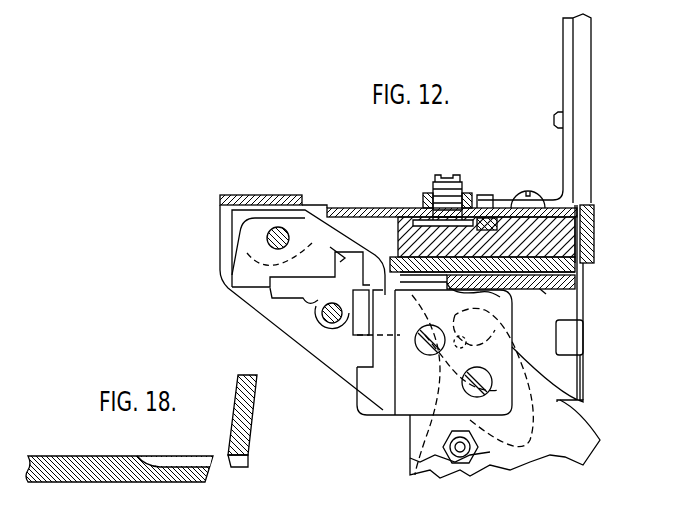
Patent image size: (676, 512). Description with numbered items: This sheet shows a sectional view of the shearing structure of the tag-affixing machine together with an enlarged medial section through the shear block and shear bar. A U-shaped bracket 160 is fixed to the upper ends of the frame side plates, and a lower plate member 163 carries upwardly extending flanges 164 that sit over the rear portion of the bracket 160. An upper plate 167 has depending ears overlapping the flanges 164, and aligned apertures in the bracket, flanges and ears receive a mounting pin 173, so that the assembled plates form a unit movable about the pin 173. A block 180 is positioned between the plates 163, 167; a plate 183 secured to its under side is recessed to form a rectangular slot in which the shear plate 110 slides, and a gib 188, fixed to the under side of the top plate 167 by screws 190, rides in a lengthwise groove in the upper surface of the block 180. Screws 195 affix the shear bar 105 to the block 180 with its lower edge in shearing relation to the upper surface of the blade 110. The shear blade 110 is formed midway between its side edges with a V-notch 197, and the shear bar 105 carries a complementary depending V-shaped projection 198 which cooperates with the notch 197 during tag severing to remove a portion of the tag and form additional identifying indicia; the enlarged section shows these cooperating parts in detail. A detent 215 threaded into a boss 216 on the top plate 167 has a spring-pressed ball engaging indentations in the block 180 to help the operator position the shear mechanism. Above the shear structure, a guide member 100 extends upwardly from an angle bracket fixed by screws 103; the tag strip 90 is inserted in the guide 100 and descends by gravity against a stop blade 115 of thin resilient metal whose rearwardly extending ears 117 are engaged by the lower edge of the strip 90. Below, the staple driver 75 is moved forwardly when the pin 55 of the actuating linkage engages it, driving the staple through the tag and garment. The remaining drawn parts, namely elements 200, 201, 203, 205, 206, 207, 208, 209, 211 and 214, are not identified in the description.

In FIG. 12, the guide member 100 is at (580, 126).
In FIG. 12, the screws 103 is at (532, 192).
In FIG. 12, the shear bar 105 is at (598, 206).
In FIG. 18, the shear bar 105 is at (254, 428).
In FIG. 12, the shear plate 110 is at (570, 263).
In FIG. 18, the shear plate 110 is at (152, 470).
In FIG. 12, the blade 115 is at (583, 372).
In FIG. 12, the ears 117 is at (580, 333).
In FIG. 12, the U-shaped bracket 160 is at (378, 393).
In FIG. 12, the lower plate member 163 is at (558, 301).
In FIG. 12, the flanges 164 is at (240, 265).
In FIG. 12, the upper plate 167 is at (341, 208).
In FIG. 12, the mounting pin 173 is at (278, 227).
In FIG. 12, the block 180 is at (553, 242).
In FIG. 12, the plate 183 is at (573, 286).
In FIG. 12, the gib 188 is at (490, 214).
In FIG. 12, the screws 190 is at (481, 195).
In FIG. 12, the screws 195 is at (600, 224).
In FIG. 18, the V-notch 197 is at (186, 458).
In FIG. 18, the V-shaped projection 198 is at (241, 468).
In FIG. 12, the housing 200 is at (275, 293).
In FIG. 12, the pin 201 is at (333, 326).
In FIG. 12, the hook 203 is at (321, 246).
In FIG. 12, the screws 205 is at (447, 367).
In FIG. 12, the lever (hidden) 206 is at (497, 335).
In FIG. 12, the lower body 207 is at (486, 481).
In FIG. 12, the plate edge 208 is at (490, 295).
In FIG. 12, the slide 209 is at (412, 285).
In FIG. 12, the surface 211 is at (396, 255).
In FIG. 12, the washer 214 is at (422, 211).
In FIG. 12, the detent 215 is at (455, 175).
In FIG. 12, the boss 216 is at (428, 192).
In FIG. 12, the pin 55 is at (320, 316).
In FIG. 12, the staple driver 75 is at (364, 350).
In FIG. 12, the tag strip 90 is at (585, 302).